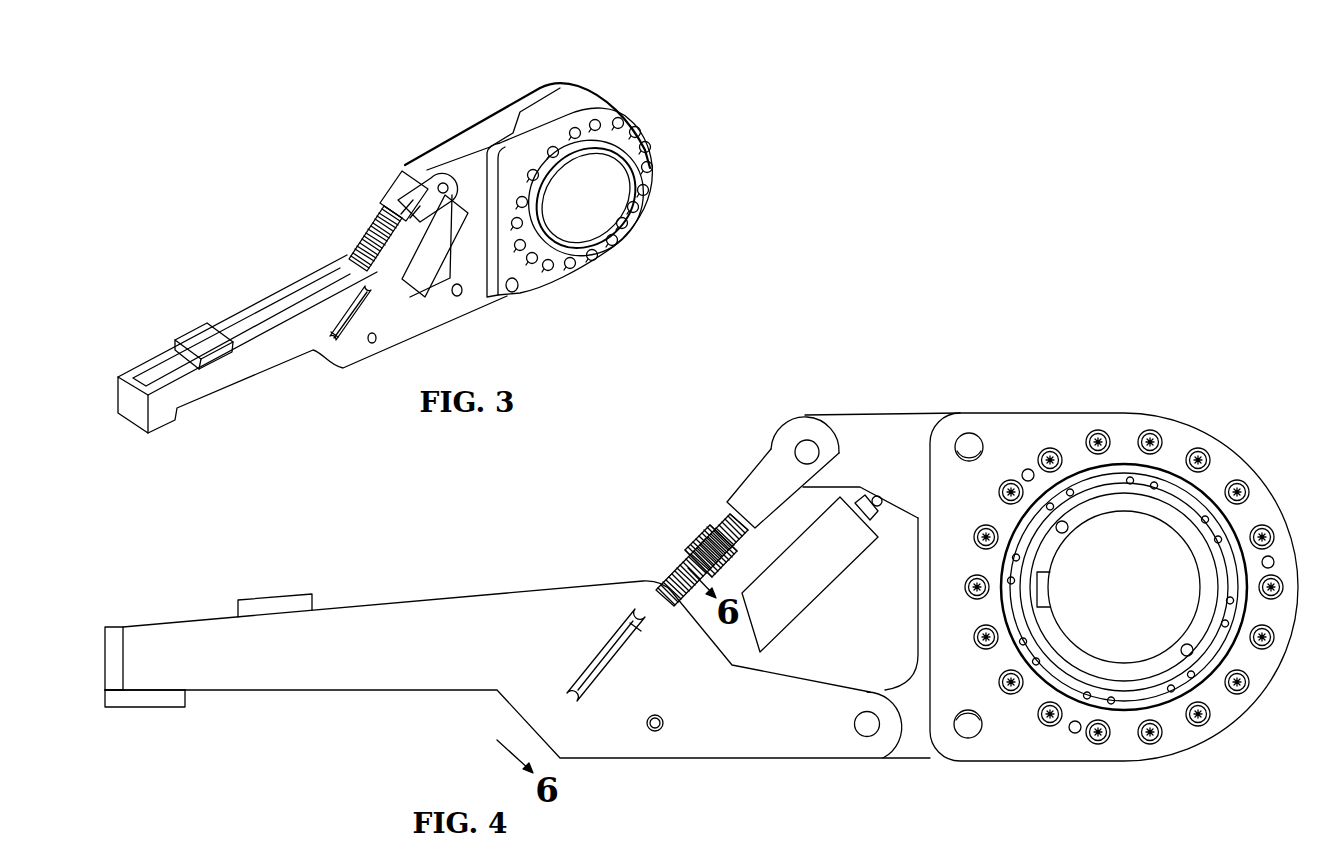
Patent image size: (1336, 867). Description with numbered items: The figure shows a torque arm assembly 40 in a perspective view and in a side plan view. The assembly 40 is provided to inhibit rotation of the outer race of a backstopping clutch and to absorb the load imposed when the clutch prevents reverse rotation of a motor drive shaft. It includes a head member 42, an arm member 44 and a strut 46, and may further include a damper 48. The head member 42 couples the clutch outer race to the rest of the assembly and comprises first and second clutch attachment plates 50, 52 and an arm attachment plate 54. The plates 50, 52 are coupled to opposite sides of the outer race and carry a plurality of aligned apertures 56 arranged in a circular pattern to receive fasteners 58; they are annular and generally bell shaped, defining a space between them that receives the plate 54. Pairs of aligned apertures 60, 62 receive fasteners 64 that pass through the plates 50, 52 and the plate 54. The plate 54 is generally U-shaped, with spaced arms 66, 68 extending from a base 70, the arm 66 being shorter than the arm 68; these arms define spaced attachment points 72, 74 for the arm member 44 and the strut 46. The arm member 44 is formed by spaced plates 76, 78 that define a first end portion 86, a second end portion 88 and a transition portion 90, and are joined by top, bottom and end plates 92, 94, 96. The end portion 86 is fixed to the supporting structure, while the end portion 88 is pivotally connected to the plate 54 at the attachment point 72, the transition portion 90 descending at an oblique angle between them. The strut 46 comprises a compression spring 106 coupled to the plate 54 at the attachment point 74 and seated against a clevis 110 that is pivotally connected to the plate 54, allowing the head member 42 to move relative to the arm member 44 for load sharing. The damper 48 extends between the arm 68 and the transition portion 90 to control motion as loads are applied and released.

In FIG. 3, the torque arm assembly 40 is at (340, 113).
In FIG. 4, the torque arm assembly 40 is at (1032, 393).
In FIG. 3, the head member 42 is at (464, 115).
In FIG. 4, the head member 42 is at (1014, 764).
In FIG. 3, the arm member 44 is at (239, 396).
In FIG. 4, the arm member 44 is at (379, 708).
In FIG. 3, the strut 46 is at (378, 228).
In FIG. 4, the strut 46 is at (688, 533).
In FIG. 3, the damper 48 is at (430, 250).
In FIG. 4, the damper 48 is at (815, 560).
In FIG. 3, the first clutch attachment plate 50 is at (655, 175).
In FIG. 4, the first clutch attachment plate 50 is at (1222, 708).
In FIG. 3, the second clutch attachment plate 52 is at (567, 88).
In FIG. 3, the arm attachment plate 54 is at (445, 150).
In FIG. 4, the aligned apertures 56 is at (1163, 438).
In FIG. 4, the fasteners 58 is at (1150, 432).
In FIG. 4, the aligned aperture 60 is at (980, 440).
In FIG. 4, the aligned aperture 62 is at (953, 745).
In FIG. 4, the fasteners 64 is at (985, 720).
In FIG. 4, the arm 66 is at (903, 747).
In FIG. 4, the arm 68 is at (908, 435).
In FIG. 4, the base 70 is at (930, 618).
In FIG. 4, the attachment point 72 is at (862, 727).
In FIG. 4, the attachment point 74 is at (803, 452).
In FIG. 3, the plate 76 is at (272, 357).
In FIG. 4, the plate 76 is at (264, 674).
In FIG. 3, the plate 78 is at (262, 290).
In FIG. 4, the first end portion 86 is at (165, 670).
In FIG. 4, the second end portion 88 is at (823, 722).
In FIG. 4, the transition portion 90 is at (623, 716).
In FIG. 4, the top plate 92 is at (278, 602).
In FIG. 4, the bottom plate 94 is at (125, 705).
In FIG. 4, the end plate 96 is at (113, 635).
In FIG. 4, the compression spring 106 is at (703, 517).
In FIG. 4, the clevis 110 is at (763, 490).